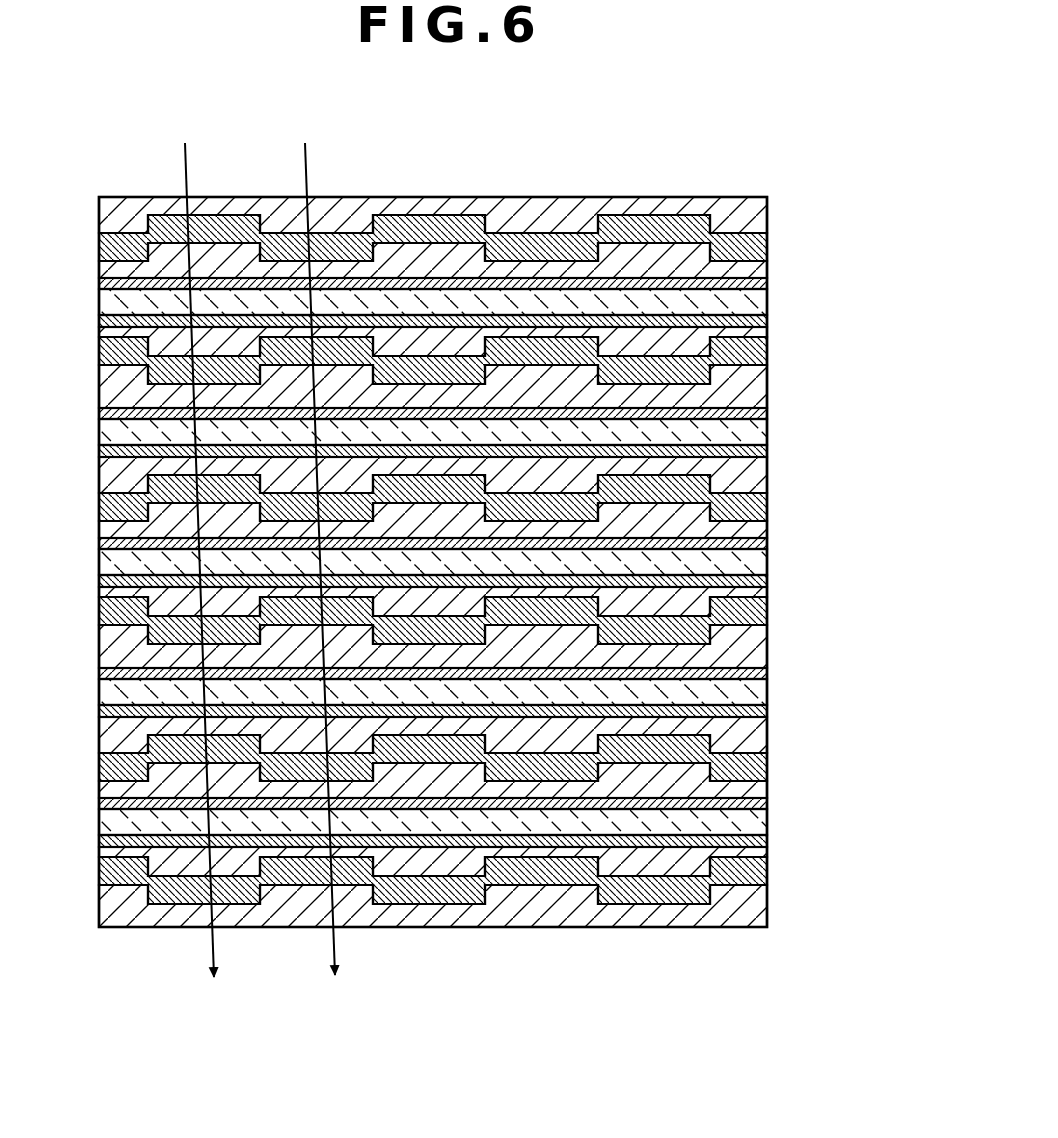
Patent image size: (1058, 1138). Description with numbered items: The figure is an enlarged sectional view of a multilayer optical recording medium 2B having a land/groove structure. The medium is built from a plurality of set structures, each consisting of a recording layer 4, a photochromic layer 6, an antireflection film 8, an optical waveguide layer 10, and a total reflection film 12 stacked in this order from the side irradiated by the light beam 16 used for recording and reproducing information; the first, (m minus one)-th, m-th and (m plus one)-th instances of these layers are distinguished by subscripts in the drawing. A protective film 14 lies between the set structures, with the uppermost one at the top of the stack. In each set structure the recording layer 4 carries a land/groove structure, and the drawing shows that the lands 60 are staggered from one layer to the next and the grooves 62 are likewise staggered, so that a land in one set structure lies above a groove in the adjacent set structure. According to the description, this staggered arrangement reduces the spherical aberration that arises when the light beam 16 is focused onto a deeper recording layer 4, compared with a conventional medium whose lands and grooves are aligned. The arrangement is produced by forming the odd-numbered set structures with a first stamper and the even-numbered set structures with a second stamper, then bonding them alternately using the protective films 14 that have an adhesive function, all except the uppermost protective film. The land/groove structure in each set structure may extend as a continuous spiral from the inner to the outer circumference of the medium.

The multilayer optical recording medium 2B is at (594, 193).
The recording layer 4 is at (767, 230).
The photochromic layer 6 is at (767, 246).
The antireflection film 8 is at (767, 270).
The optical waveguide layer 10 is at (767, 290).
The total reflection film 12 is at (767, 312).
The protective film 14 is at (728, 212).
The light beam 16 is at (214, 953).
The lands 60 is at (405, 213).
The grooves 62 is at (529, 235).